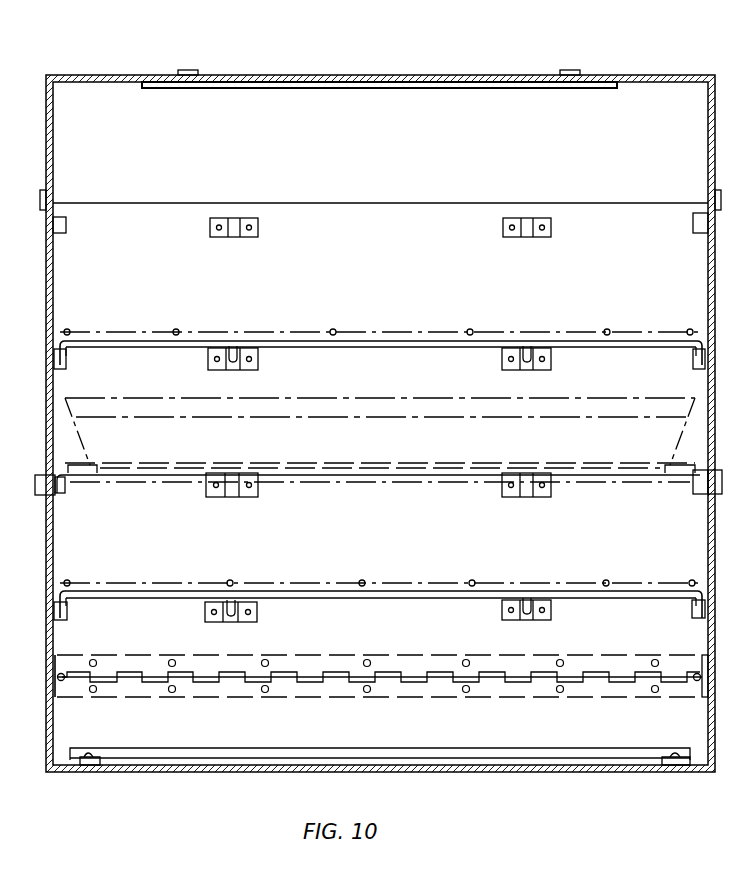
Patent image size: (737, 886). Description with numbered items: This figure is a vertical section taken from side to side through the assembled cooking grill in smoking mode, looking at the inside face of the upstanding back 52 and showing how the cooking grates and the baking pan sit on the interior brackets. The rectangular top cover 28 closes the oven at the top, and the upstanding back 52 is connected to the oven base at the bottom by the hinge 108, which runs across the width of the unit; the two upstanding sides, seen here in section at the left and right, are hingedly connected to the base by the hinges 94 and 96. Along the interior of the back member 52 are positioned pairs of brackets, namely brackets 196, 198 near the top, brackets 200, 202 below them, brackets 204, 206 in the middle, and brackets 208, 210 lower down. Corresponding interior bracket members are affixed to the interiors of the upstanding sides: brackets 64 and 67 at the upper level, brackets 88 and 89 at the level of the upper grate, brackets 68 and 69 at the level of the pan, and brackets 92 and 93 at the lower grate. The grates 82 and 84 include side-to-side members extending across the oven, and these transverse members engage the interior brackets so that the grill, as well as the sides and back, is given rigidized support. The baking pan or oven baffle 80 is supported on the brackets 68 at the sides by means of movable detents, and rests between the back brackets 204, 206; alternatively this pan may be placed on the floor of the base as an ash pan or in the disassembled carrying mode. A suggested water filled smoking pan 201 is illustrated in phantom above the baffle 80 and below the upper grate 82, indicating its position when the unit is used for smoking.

The rectangular top cover 28 is at (410, 100).
The upstanding back 52 is at (393, 266).
The interior bracket 64 is at (693, 223).
The interior bracket 67 is at (66, 228).
The interior bracket 68 is at (700, 494).
The interior bracket 69 is at (65, 488).
The baking pan or oven baffle 80 is at (337, 462).
The grate 82 is at (383, 341).
The grate 84 is at (362, 585).
The interior bracket 88 is at (690, 356).
The interior bracket 89 is at (66, 357).
The interior bracket 92 is at (690, 606).
The interior bracket 93 is at (67, 612).
The hinge 94 is at (702, 690).
The hinge 96 is at (57, 697).
The hinge 108 is at (400, 697).
The interior bracket 196 is at (248, 237).
The interior bracket 198 is at (513, 237).
The interior bracket 200 is at (258, 362).
The water filled smoking pan 201 is at (333, 398).
The interior bracket 202 is at (502, 362).
The interior bracket 204 is at (258, 486).
The interior bracket 206 is at (551, 486).
The interior bracket 208 is at (257, 612).
The interior bracket 210 is at (502, 612).